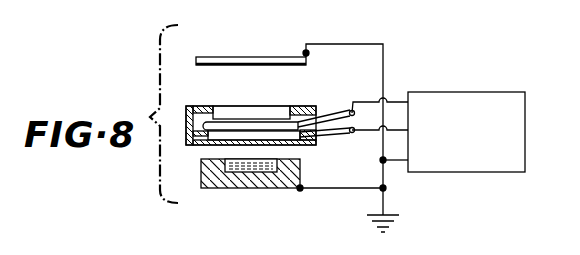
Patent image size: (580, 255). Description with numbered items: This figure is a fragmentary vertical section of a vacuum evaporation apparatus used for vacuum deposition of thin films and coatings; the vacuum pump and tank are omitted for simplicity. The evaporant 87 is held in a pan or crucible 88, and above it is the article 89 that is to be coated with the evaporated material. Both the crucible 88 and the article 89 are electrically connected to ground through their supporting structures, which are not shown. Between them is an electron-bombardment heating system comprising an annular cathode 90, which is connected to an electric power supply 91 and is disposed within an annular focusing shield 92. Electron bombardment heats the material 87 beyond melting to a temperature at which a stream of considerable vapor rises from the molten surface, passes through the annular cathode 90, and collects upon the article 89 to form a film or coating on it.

The evaporant 87 is at (250, 170).
The crucible 88 is at (302, 178).
The article 89 is at (246, 57).
The annular cathode 90 is at (231, 128).
The electric power supply 91 is at (465, 83).
The annular focusing shield 92 is at (205, 107).